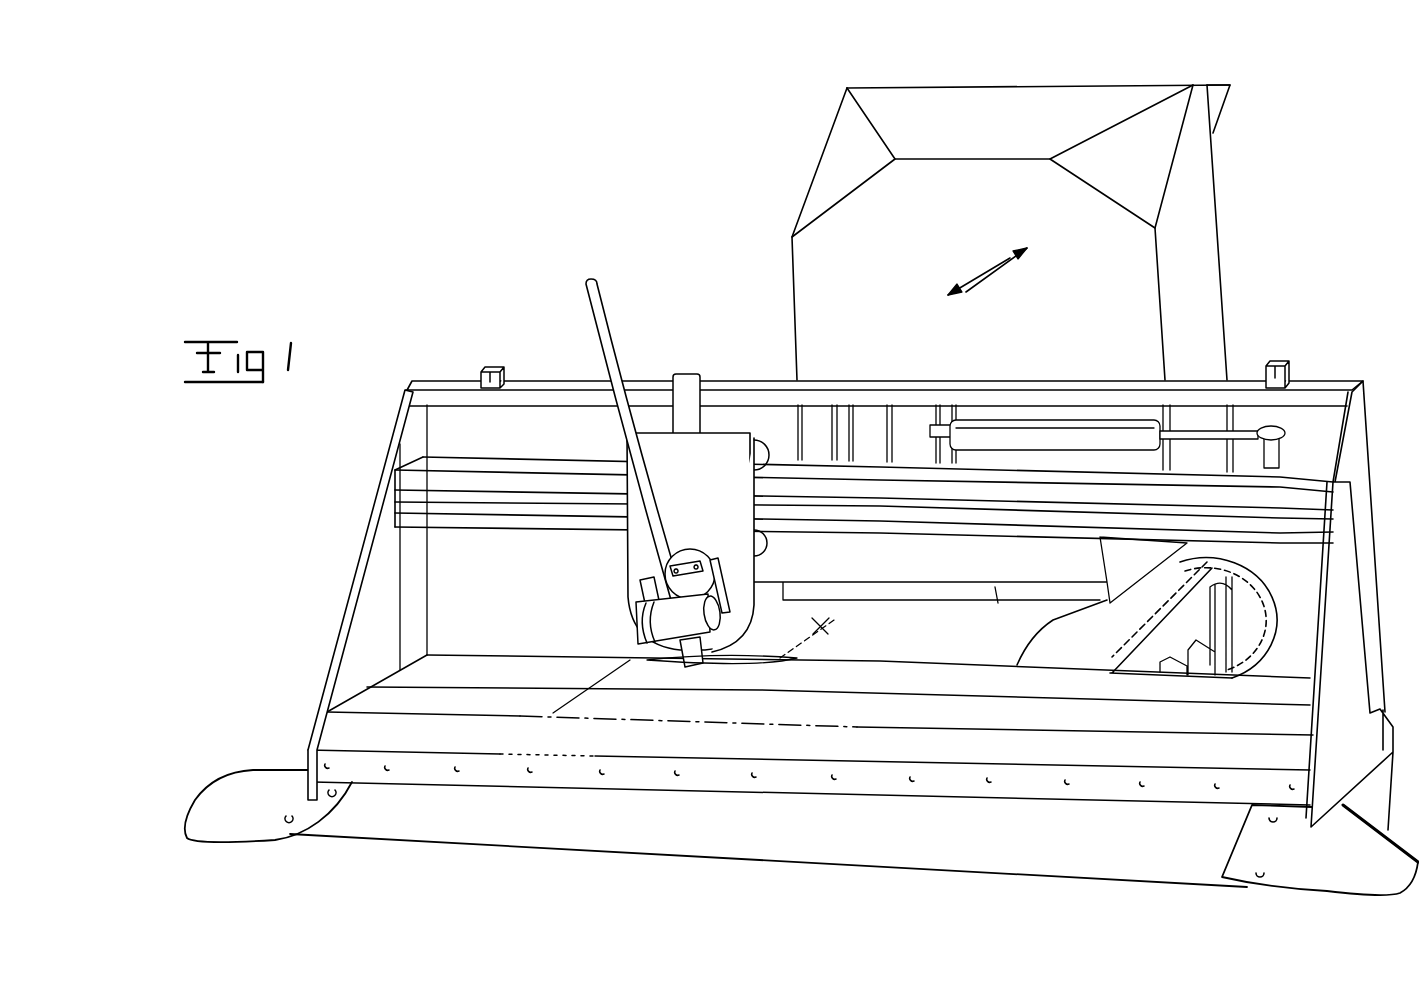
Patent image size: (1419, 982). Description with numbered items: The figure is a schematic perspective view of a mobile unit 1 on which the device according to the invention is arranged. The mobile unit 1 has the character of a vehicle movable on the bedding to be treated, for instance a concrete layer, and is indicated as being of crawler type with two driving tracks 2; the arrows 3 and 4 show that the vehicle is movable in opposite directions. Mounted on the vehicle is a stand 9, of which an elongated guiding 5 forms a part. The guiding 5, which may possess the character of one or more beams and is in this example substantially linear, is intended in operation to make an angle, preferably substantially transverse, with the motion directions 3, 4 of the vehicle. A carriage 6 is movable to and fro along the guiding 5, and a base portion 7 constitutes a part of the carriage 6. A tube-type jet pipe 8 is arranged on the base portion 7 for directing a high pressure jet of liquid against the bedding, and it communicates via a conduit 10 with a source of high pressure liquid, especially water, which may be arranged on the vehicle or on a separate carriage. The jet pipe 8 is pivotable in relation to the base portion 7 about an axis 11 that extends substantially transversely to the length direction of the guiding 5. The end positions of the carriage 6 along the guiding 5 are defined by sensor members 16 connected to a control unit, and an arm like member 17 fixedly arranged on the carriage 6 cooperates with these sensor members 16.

The mobile unit 1 is at (755, 202).
The driving tracks 2 is at (830, 625).
The arrow 3 is at (983, 268).
The arrow 4 is at (1002, 267).
The elongated guiding 5 is at (957, 483).
The carriage 6 is at (725, 432).
The base portion 7 is at (740, 564).
The jet pipe 8 is at (687, 675).
The stand 9 is at (405, 590).
The conduit 10 is at (597, 308).
The axis 11 is at (598, 680).
The sensor members 16 is at (490, 370).
The arm like member 17 is at (688, 385).